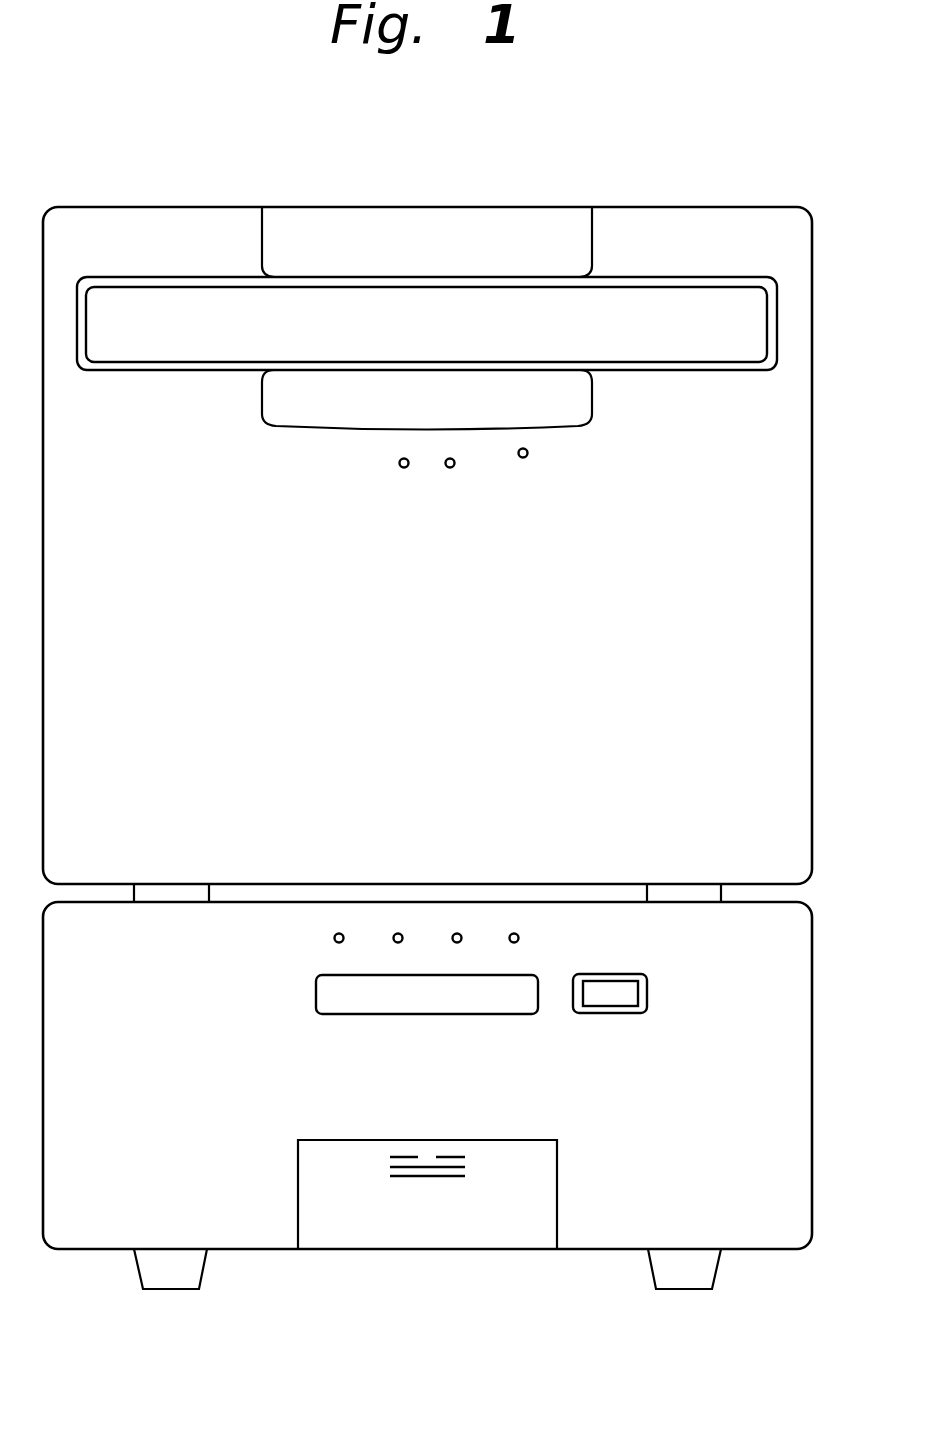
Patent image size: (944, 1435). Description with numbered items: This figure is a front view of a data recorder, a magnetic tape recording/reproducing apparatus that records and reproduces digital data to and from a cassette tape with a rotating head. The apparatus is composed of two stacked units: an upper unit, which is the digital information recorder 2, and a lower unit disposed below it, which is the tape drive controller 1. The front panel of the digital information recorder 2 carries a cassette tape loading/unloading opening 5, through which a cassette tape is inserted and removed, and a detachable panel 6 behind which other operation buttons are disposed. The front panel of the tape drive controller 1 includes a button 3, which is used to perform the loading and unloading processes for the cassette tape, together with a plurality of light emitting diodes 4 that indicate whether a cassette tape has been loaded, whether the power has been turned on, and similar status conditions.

The tape drive controller 1 is at (587, 1250).
The digital information recorder 2 is at (612, 206).
The button 3 is at (628, 998).
The light emitting diodes 4 is at (432, 949).
The cassette tape loading/unloading opening 5 is at (651, 330).
The detachable panel 6 is at (445, 1215).